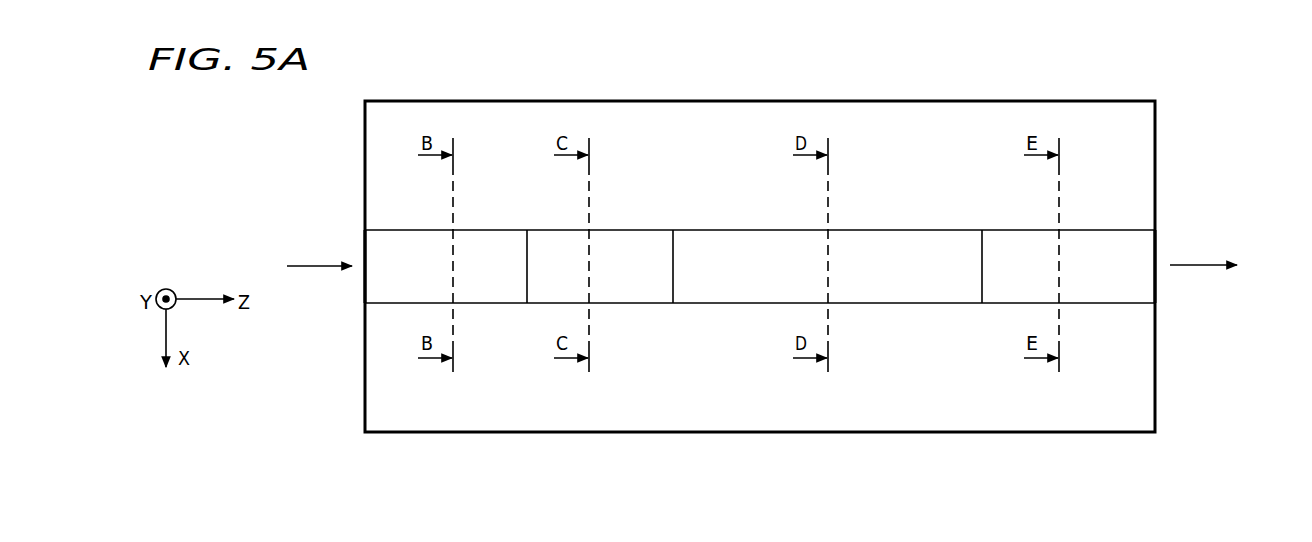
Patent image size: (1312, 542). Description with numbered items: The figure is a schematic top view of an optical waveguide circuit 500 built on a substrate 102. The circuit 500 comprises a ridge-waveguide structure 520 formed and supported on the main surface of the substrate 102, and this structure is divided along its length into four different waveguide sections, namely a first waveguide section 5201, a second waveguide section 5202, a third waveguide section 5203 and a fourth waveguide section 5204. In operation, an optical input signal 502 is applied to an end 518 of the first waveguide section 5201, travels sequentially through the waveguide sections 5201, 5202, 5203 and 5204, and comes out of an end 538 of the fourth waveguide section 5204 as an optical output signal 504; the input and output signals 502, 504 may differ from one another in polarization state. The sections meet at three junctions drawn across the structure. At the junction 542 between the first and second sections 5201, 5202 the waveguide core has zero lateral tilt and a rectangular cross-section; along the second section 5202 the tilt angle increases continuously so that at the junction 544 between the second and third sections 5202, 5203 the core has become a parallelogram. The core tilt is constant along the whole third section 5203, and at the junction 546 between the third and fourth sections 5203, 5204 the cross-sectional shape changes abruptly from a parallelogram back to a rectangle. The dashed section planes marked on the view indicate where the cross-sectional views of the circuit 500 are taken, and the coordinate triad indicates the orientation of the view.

The optical waveguide circuit 500 is at (247, 122).
The substrate 102 is at (1105, 100).
The end of waveguide section 518 is at (364, 239).
The end of waveguide section 538 is at (1158, 237).
The ridge-waveguide structure 520 is at (1185, 236).
The first waveguide section 5201 is at (492, 226).
The second waveguide section 5202 is at (636, 226).
The third waveguide section 5203 is at (900, 226).
The fourth waveguide section 5204 is at (1110, 226).
The optical input signal 502 is at (308, 268).
The optical output signal 504 is at (1193, 267).
The junction 542 is at (525, 310).
The junction 544 is at (671, 310).
The junction 546 is at (980, 310).